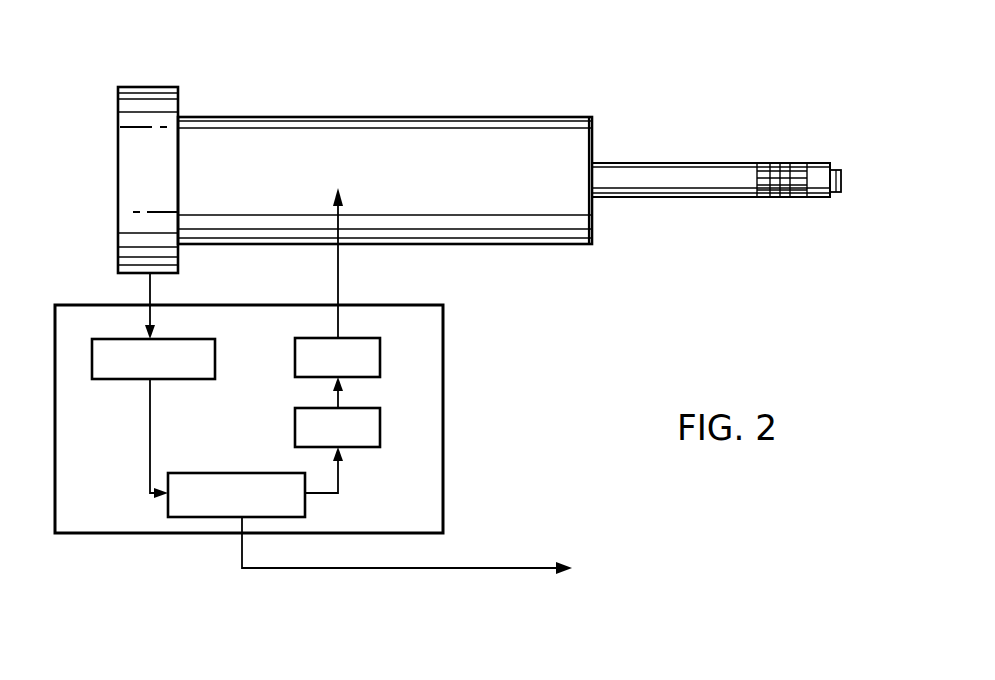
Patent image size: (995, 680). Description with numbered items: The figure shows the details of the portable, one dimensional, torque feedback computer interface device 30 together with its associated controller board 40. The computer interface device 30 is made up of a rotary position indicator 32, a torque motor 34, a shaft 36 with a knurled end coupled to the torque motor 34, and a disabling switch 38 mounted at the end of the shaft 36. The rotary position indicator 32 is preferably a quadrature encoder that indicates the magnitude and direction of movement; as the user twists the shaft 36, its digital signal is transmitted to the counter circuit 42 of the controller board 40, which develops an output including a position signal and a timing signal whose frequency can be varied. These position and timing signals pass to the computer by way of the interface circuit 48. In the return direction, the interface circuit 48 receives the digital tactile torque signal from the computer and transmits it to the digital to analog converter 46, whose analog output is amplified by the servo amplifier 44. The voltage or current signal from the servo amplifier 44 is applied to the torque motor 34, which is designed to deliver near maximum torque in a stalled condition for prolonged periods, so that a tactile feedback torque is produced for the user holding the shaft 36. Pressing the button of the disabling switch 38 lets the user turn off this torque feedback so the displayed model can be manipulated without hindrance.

The computer interface device 30 is at (550, 262).
The rotary position indicator 32 is at (148, 86).
The torque motor 34 is at (297, 115).
The shaft 36 is at (673, 199).
The disabling switch 38 is at (846, 166).
The controller board 40 is at (443, 403).
The counter circuit 42 is at (215, 366).
The servo amplifier 44 is at (380, 357).
The digital to analog converter 46 is at (380, 428).
The interface circuit 48 is at (228, 473).